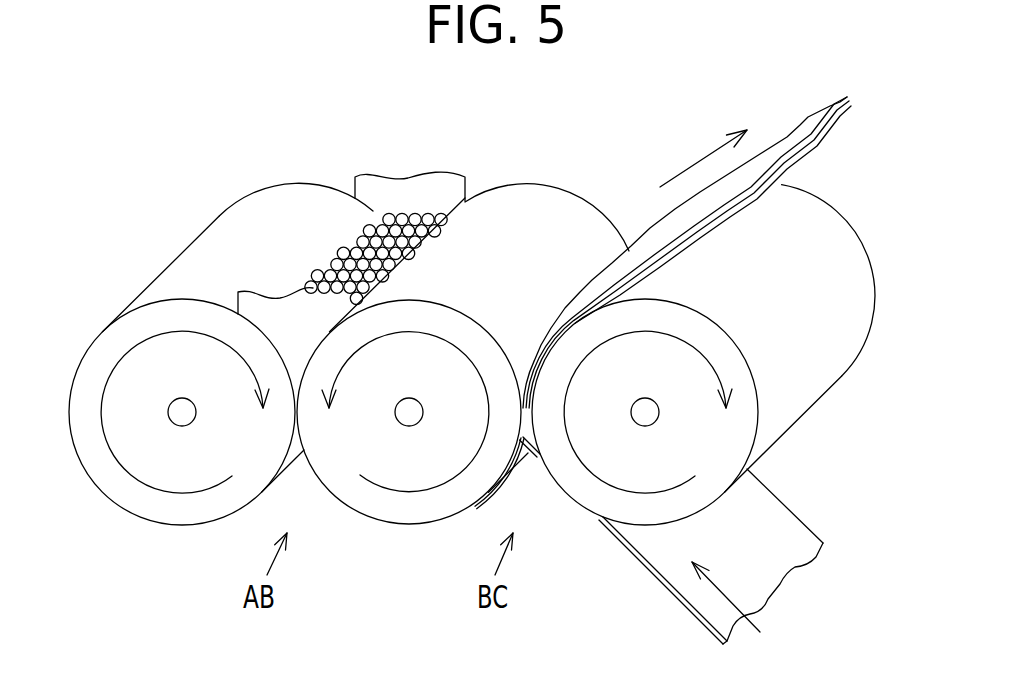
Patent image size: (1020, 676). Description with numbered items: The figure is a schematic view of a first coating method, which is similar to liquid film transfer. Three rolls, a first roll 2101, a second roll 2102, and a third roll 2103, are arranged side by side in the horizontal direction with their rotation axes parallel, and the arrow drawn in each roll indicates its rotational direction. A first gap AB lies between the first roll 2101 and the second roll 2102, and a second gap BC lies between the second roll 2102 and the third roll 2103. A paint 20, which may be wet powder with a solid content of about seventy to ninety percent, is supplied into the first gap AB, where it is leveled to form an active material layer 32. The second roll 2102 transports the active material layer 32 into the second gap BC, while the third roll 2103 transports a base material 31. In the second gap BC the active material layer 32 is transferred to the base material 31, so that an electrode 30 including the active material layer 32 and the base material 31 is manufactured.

The first roll 2101 is at (307, 195).
The second roll 2102 is at (520, 197).
The third roll 2103 is at (845, 227).
The paint 20 is at (393, 225).
The electrode 30 is at (880, 64).
The base material 31 is at (848, 121).
The active material layer 32 is at (788, 145).